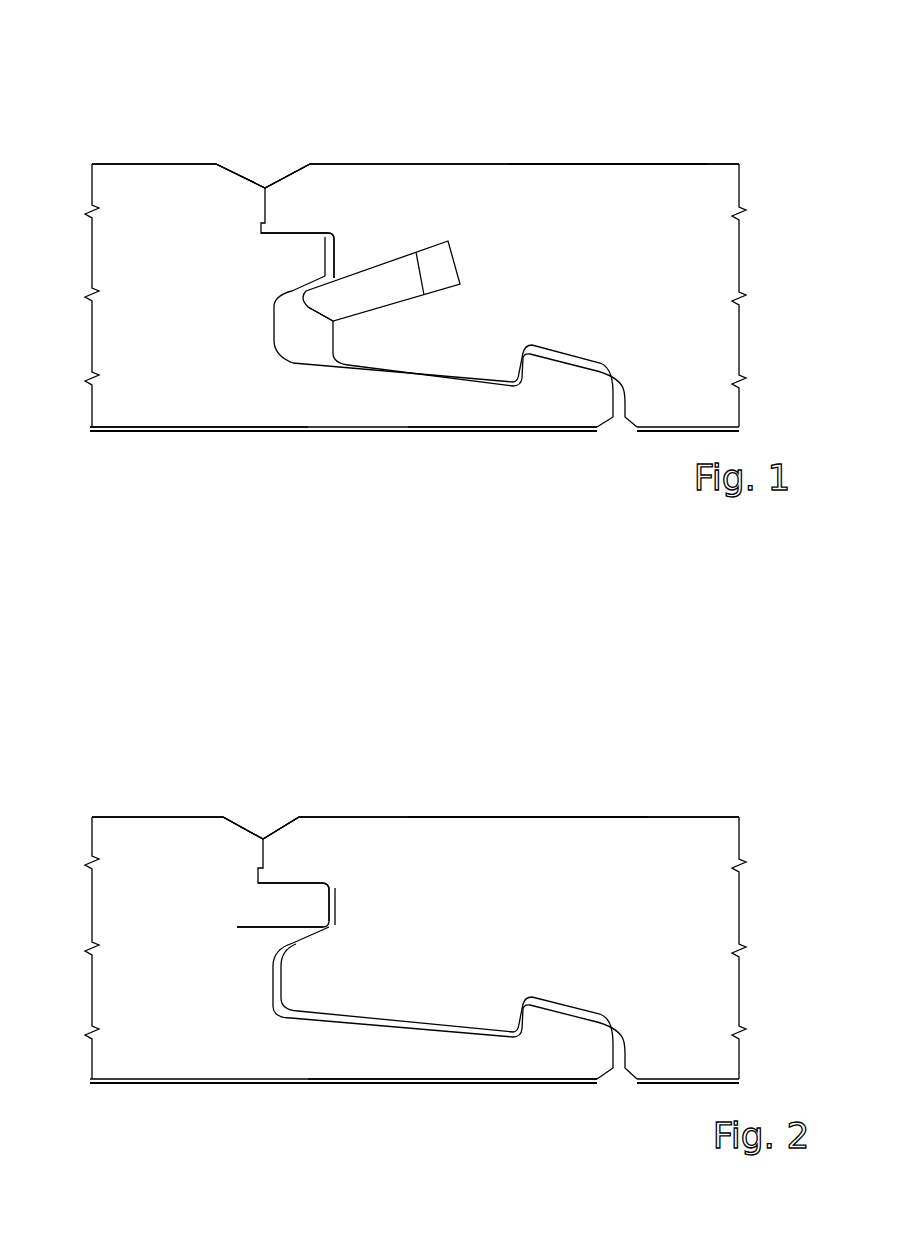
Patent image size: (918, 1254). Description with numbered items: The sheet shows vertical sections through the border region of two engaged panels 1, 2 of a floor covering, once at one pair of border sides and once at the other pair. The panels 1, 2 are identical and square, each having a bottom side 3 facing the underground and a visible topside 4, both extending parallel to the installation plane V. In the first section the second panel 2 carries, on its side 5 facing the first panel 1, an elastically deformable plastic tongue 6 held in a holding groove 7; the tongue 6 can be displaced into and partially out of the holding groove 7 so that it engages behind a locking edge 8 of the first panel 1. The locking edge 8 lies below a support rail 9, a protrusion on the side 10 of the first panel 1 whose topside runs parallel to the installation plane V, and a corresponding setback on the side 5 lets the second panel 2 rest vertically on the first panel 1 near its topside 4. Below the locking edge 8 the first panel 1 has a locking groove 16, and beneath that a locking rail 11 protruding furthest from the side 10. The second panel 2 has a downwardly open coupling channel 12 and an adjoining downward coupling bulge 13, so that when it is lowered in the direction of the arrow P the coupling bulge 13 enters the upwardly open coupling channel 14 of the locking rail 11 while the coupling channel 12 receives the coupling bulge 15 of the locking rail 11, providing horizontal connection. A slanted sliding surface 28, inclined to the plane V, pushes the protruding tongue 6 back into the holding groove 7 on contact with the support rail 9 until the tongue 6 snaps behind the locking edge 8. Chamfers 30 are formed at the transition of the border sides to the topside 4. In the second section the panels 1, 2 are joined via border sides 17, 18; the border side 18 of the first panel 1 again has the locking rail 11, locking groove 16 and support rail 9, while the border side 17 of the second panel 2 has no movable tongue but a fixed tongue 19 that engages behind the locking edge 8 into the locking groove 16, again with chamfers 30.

In FIG. 1, the first panel 1 is at (114, 404).
In FIG. 2, the first panel 1 is at (139, 1044).
In FIG. 1, the second panel 2 is at (699, 164).
In FIG. 2, the second panel 2 is at (645, 824).
In FIG. 1, the bottom side 3 is at (146, 429).
In FIG. 1, the topside 4 is at (624, 150).
In FIG. 2, the topside 4 is at (541, 805).
In FIG. 1, the side of the second panel 5 is at (243, 196).
In FIG. 1, the tongue 6 is at (366, 248).
In FIG. 1, the holding groove 7 is at (437, 256).
In FIG. 1, the locking edge 8 is at (310, 270).
In FIG. 2, the locking edge 8 is at (229, 919).
In FIG. 1, the support rail 9 is at (300, 229).
In FIG. 2, the support rail 9 is at (287, 894).
In FIG. 1, the side of the first panel 10 is at (268, 189).
In FIG. 1, the locking rail 11 is at (497, 405).
In FIG. 2, the locking rail 11 is at (433, 1049).
In FIG. 1, the coupling channel 12 is at (565, 345).
In FIG. 1, the coupling bulge 13 is at (427, 345).
In FIG. 1, the coupling channel 14 is at (380, 365).
In FIG. 1, the coupling bulge 15 is at (534, 364).
In FIG. 1, the locking groove 16 is at (274, 302).
In FIG. 2, the border side 17 is at (246, 853).
In FIG. 2, the border side 18 is at (264, 843).
In FIG. 2, the fixed tongue 19 is at (302, 955).
In FIG. 1, the sliding surface 28 is at (309, 313).
In FIG. 1, the chamfers 30 is at (272, 171).
In FIG. 2, the chamfers 30 is at (272, 811).
In FIG. 1, the direction of arrow P is at (703, 210).